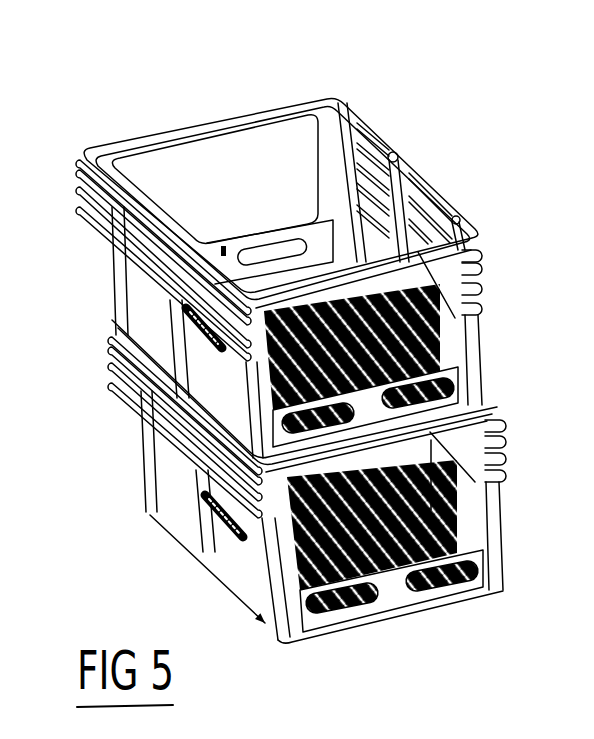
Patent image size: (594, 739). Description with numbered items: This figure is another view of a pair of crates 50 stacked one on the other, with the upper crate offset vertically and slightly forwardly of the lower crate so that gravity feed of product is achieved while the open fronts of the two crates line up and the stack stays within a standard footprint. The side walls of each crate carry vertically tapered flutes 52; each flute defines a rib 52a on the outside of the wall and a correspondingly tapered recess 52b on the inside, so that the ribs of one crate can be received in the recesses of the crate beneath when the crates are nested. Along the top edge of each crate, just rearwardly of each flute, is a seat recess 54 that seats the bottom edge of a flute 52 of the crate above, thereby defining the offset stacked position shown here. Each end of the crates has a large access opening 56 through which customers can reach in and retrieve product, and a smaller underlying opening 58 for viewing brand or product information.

The crate 50 is at (499, 397).
The vertically tapered flute 52 is at (407, 165).
The rib 52a is at (168, 318).
The tapered recess 52b is at (336, 108).
The seat recess 54 is at (395, 158).
The access opening 56 is at (480, 524).
The underlying opening 58 is at (463, 583).